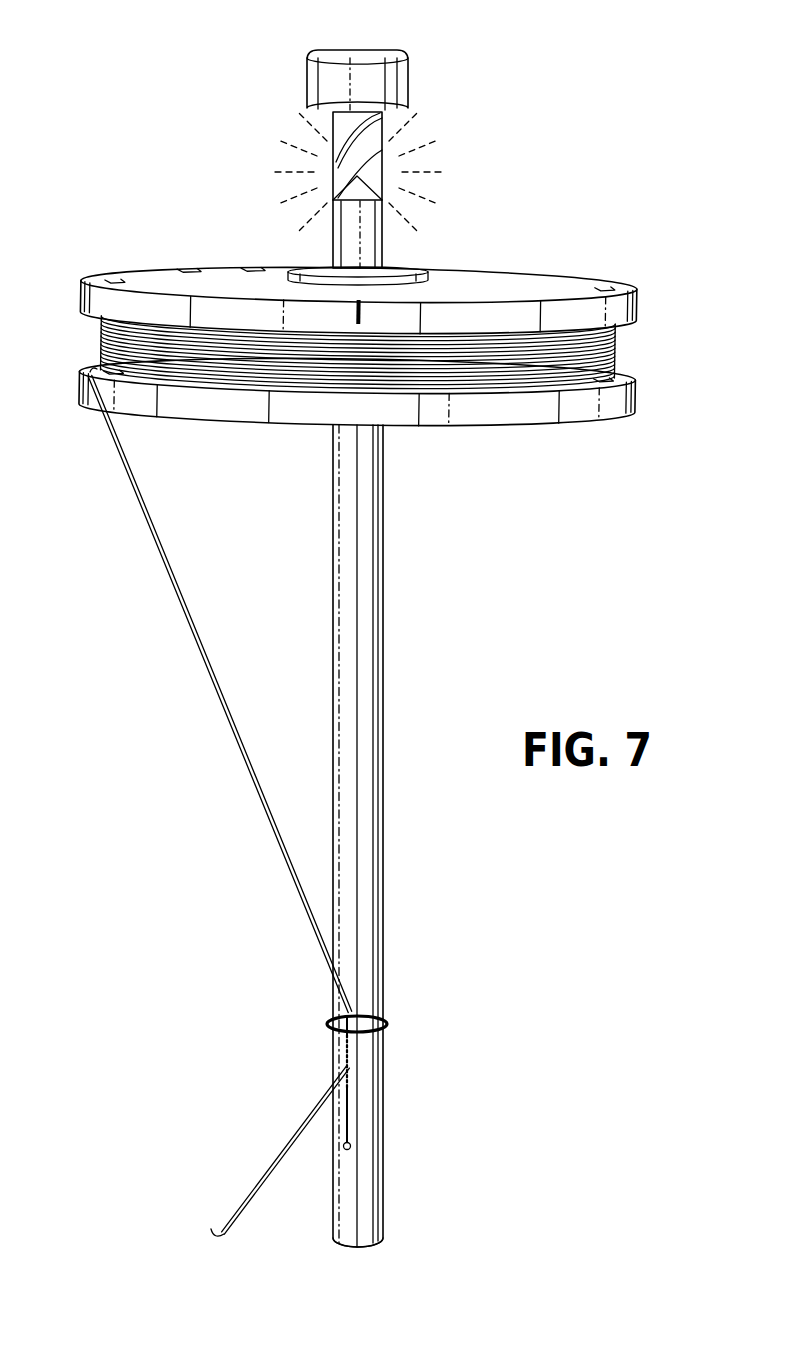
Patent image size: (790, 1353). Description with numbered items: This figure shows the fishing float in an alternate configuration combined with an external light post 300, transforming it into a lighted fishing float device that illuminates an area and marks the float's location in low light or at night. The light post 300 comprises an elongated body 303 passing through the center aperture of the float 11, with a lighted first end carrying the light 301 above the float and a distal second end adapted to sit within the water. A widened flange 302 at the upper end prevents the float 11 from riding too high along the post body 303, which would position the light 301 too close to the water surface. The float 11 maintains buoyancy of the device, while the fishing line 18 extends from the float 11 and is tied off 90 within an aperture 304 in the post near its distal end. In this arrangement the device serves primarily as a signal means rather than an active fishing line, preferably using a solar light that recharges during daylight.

The light post 300 is at (505, 136).
The float 11 is at (592, 240).
The light 301 is at (385, 190).
The widened flange 302 is at (395, 273).
The elongated body 303 is at (385, 588).
The aperture 304 is at (352, 1108).
The tie-off 90 is at (377, 1021).
The fishing line 18 is at (178, 600).